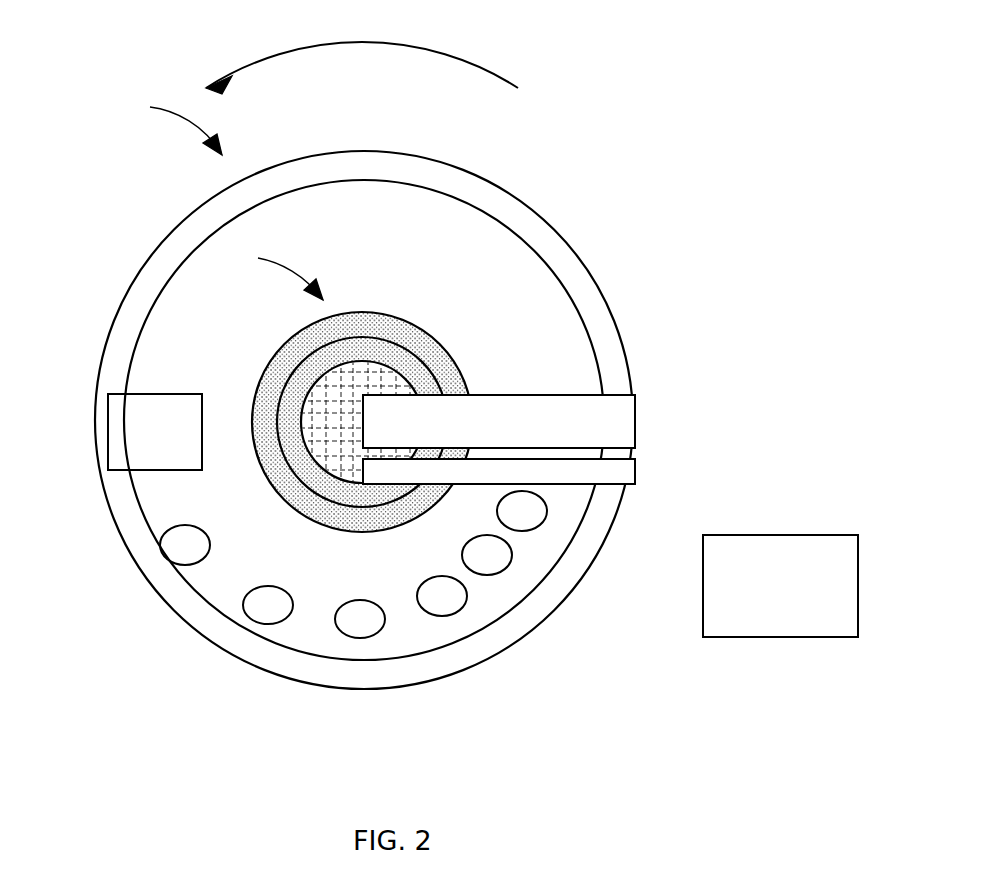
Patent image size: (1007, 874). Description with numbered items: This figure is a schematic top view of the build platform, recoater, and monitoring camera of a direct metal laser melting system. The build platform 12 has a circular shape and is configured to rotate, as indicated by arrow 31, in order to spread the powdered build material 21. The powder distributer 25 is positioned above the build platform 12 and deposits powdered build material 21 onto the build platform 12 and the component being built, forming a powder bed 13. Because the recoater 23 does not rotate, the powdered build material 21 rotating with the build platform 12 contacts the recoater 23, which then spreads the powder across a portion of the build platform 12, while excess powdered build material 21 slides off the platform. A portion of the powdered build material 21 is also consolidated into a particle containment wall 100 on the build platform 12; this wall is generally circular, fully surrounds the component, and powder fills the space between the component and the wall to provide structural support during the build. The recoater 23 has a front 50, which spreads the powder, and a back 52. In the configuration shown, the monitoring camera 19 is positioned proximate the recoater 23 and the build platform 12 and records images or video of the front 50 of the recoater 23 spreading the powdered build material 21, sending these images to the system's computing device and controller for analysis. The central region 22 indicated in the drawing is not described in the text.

The particle containment wall 100 is at (160, 240).
The build platform 12 is at (168, 124).
The arrow 31 is at (488, 68).
The clamping hub 22 is at (345, 386).
The powder bed 13 is at (300, 370).
The powdered build material 21 is at (393, 363).
The powder distributer 25 is at (108, 430).
The recoater 23 is at (637, 415).
The back 52 is at (548, 395).
The front 50 is at (550, 448).
The monitoring camera 19 is at (777, 535).